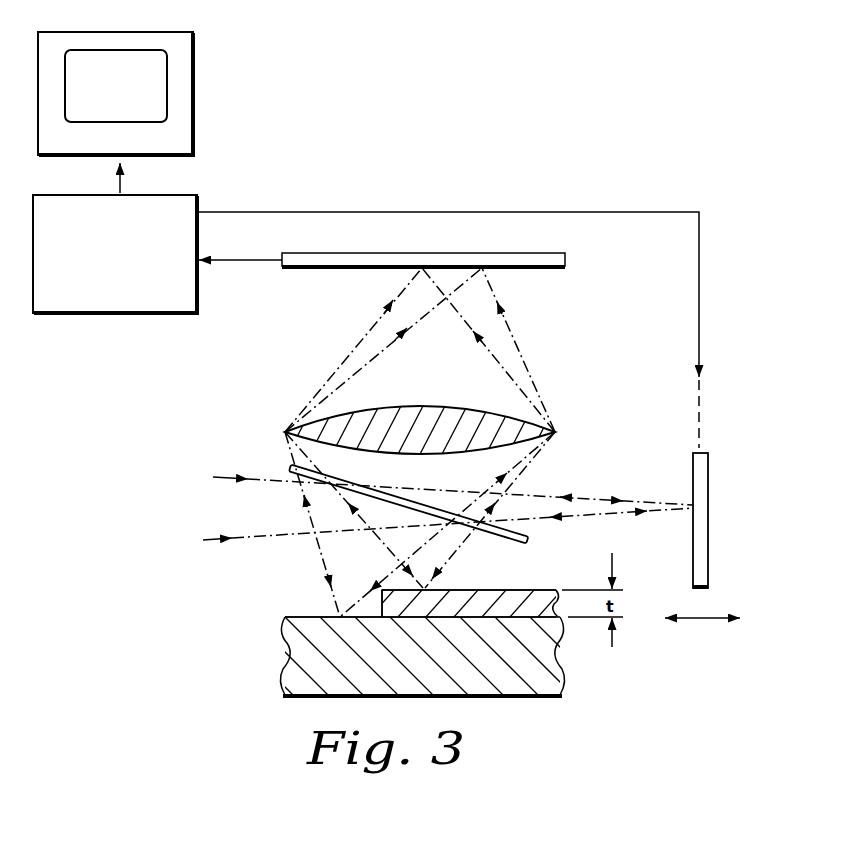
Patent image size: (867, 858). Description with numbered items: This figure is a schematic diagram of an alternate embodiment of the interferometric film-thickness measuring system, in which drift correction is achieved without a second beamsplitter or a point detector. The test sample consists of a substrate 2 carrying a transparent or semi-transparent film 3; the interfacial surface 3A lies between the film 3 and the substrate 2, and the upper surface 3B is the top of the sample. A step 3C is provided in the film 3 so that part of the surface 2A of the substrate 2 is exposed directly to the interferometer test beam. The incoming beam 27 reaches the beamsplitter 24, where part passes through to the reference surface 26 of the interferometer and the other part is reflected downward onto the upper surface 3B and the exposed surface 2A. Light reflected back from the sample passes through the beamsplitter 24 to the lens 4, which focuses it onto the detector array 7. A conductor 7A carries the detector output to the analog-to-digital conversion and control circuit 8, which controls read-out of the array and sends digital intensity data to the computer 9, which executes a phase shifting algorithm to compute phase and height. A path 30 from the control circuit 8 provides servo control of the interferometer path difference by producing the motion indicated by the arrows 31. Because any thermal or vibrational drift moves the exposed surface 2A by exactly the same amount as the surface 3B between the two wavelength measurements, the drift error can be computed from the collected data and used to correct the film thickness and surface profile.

The computer 9 is at (166, 33).
The analog-to-digital conversion and control circuit 8 is at (178, 170).
The detector array 7 is at (544, 252).
The conductor 7A is at (252, 260).
The path 30 is at (700, 292).
The lens 4 is at (475, 415).
The beamsplitter 24 is at (510, 542).
The beam 27 is at (283, 482).
The reference surface 26 is at (708, 580).
The arrows 31 is at (697, 619).
The substrate 2 is at (544, 671).
The surface of substrate 2A is at (295, 615).
The film 3 is at (560, 617).
The interfacial surface 3A is at (466, 608).
The upper surface 3B is at (554, 596).
The step 3C is at (352, 614).